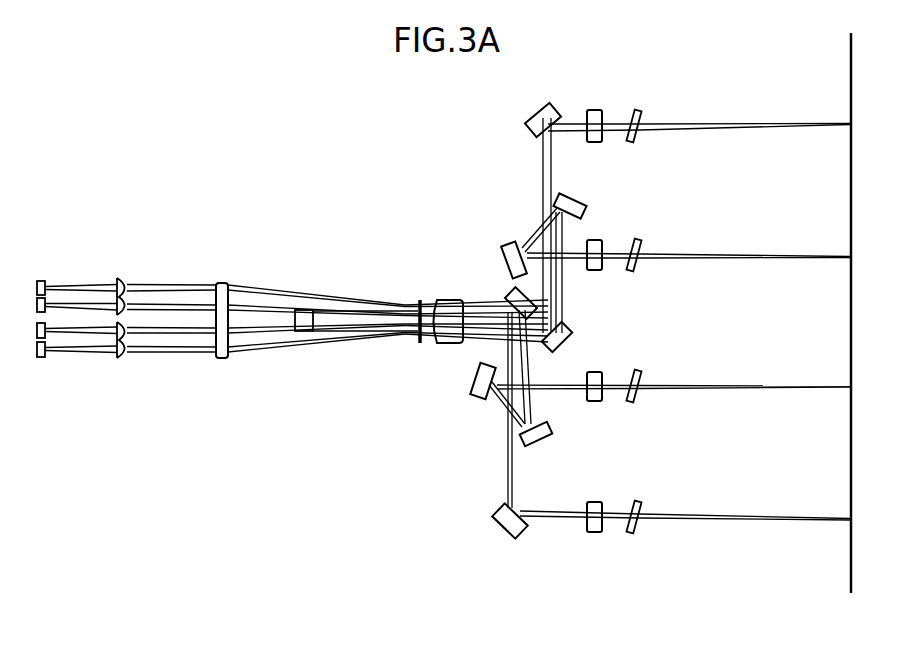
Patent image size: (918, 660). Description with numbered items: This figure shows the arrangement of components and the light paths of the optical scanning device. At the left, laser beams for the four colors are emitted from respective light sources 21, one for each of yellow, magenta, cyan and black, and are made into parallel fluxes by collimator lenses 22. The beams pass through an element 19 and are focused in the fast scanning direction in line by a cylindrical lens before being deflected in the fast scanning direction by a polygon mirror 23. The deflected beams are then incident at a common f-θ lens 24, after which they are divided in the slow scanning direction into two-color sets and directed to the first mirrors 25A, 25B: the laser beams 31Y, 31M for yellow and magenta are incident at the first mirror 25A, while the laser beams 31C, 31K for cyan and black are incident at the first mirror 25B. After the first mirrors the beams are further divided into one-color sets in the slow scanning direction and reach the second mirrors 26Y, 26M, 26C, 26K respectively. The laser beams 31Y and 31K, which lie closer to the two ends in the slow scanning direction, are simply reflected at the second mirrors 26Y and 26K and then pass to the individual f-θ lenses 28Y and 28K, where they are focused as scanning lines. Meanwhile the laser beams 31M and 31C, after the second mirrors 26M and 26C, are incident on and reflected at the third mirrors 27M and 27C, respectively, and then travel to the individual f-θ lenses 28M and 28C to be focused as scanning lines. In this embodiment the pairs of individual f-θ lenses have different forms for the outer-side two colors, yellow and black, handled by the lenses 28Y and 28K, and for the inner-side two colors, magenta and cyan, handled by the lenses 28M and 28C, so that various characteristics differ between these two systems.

The lens 19 is at (222, 282).
The light source 21 is at (41, 280).
The collimator lens 22 is at (119, 278).
The polygon mirror 23 is at (305, 309).
The common f-θ lens 24 is at (446, 344).
The first mirror 25A is at (505, 292).
The first mirror 25B is at (573, 336).
The second mirror 26K is at (543, 105).
The second mirror 26C is at (582, 201).
The second mirror 26M is at (540, 447).
The second mirror 26Y is at (505, 540).
The third mirror 27C is at (510, 238).
The third mirror 27M is at (478, 399).
The individual f-θ lens 28K is at (595, 108).
The individual f-θ lens 28C is at (595, 271).
The individual f-θ lens 28M is at (595, 402).
The individual f-θ lens 28Y is at (595, 533).
The laser beam 31K is at (707, 121).
The laser beam 31C is at (707, 253).
The laser beam 31M is at (757, 384).
The laser beam 31Y is at (770, 523).